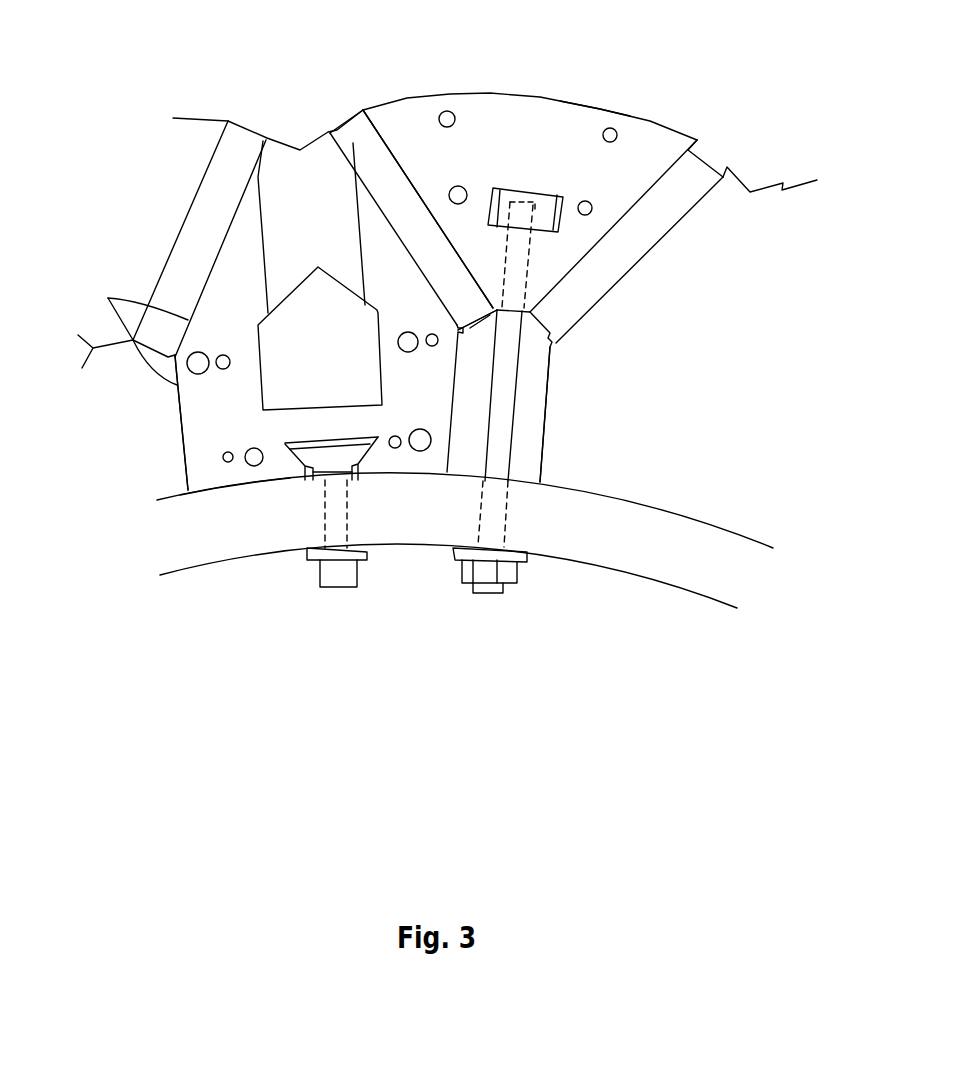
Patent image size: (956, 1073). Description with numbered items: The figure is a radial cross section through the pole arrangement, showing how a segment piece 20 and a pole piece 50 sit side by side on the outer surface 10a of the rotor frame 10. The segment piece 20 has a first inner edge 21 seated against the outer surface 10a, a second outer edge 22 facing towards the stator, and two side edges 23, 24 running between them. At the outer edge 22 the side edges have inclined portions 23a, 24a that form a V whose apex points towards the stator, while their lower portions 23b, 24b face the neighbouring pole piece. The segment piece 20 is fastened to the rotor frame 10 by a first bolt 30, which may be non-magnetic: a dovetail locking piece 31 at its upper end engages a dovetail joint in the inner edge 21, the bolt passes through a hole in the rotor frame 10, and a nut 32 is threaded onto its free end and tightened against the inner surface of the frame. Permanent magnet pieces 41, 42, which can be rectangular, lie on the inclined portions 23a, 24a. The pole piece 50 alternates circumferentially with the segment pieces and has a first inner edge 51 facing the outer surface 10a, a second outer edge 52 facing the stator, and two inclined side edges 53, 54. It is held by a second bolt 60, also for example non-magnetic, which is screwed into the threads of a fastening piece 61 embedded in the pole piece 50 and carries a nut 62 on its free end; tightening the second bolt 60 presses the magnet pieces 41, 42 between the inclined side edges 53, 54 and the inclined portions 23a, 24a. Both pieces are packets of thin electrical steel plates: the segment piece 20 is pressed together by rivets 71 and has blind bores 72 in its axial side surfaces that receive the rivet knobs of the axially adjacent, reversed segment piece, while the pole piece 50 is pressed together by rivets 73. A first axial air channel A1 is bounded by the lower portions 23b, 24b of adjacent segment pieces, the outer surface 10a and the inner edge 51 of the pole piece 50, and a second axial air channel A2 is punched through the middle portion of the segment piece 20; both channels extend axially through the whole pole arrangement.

The rotor frame 10 is at (697, 580).
The outer surface of the rotor frame 10a is at (683, 517).
The segment piece 20 is at (197, 455).
The first inner edge 21 is at (204, 491).
The second outer edge 22 is at (300, 137).
The side edge 23 is at (124, 325).
The inclined portion 23a is at (235, 220).
The lower portion 23b is at (177, 398).
The side edge 24 is at (427, 280).
The inclined portion 24a is at (366, 190).
The lower portion 24b is at (448, 438).
The first bolt 30 is at (342, 515).
The dovetail locking piece 31 is at (285, 443).
The nut 32 is at (343, 575).
The permanent magnet piece 41 is at (352, 143).
The permanent magnet piece 42 is at (695, 173).
The pole piece 50 is at (527, 117).
The first inner edge 51 is at (512, 313).
The second outer edge 52 is at (588, 107).
The inclined side edge 53 is at (433, 218).
The inclined side edge 54 is at (643, 198).
The second bolt 60 is at (493, 515).
The fastening piece 61 is at (545, 210).
The nut 62 is at (508, 577).
The rivet 71 is at (228, 462).
The blind bore 72 is at (253, 466).
The rivet 73 is at (614, 128).
The first axial air channel A1 is at (533, 391).
The second axial air channel A2 is at (347, 372).